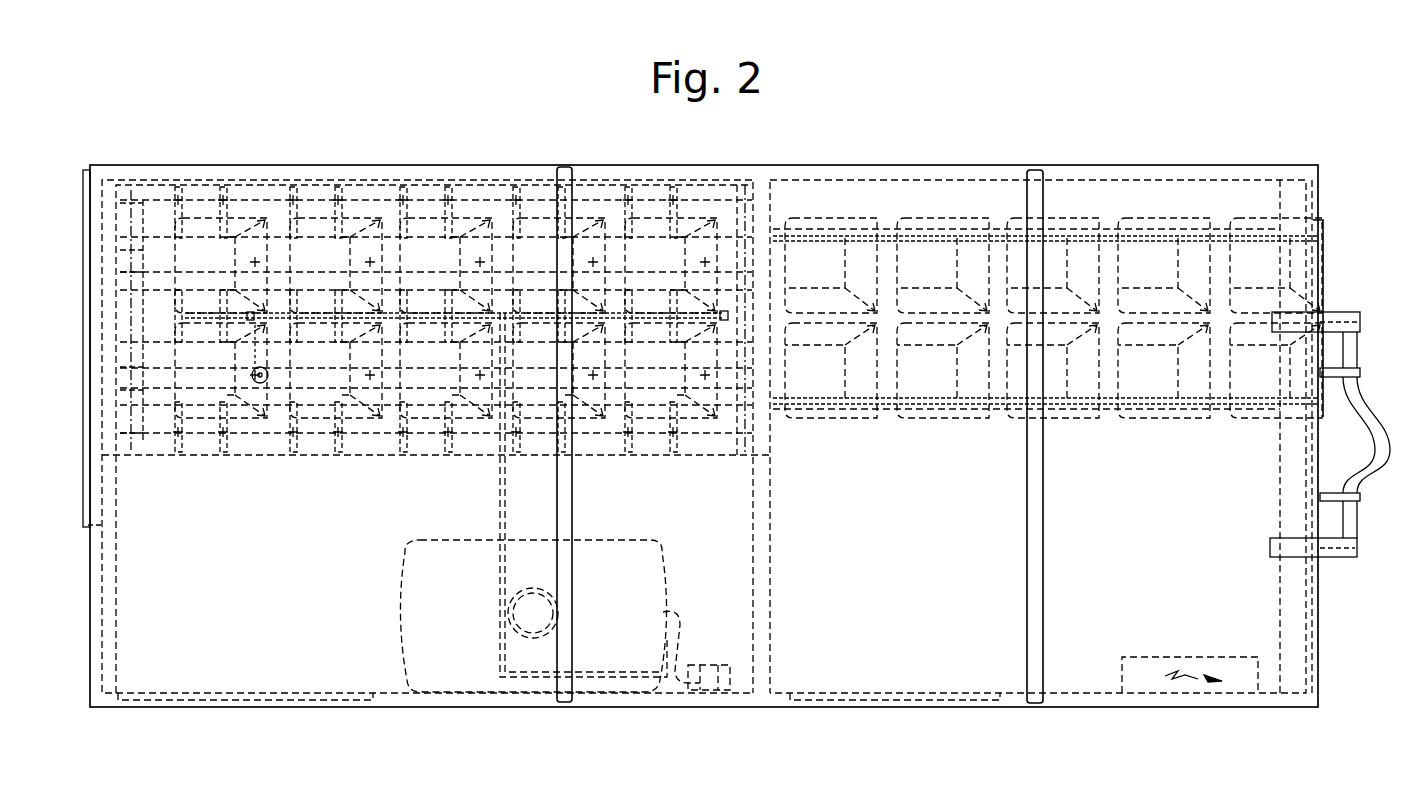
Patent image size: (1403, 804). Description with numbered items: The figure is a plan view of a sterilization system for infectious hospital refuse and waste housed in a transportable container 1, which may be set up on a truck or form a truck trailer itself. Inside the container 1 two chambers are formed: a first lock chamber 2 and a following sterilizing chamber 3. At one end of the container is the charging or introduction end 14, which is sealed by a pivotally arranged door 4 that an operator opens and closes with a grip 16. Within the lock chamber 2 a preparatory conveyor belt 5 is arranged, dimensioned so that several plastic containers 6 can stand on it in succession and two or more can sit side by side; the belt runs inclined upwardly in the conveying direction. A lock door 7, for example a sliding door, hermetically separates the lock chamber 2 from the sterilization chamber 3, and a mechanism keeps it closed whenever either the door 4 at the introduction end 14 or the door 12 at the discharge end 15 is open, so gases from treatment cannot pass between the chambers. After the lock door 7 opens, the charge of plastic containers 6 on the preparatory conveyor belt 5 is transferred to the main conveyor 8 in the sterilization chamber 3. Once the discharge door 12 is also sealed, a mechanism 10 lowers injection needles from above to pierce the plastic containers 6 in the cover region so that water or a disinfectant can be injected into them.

The container 1 is at (845, 712).
The lock chamber 2 is at (1090, 648).
The sterilizing chamber 3 is at (293, 648).
The door 4 is at (1320, 513).
The preparatory conveyor belt 5 is at (1115, 230).
The plastic containers 6 is at (512, 192).
The lock door 7 is at (763, 247).
The main conveyor 8 is at (613, 237).
The mechanism 10 is at (262, 198).
The discharge door 12 is at (97, 222).
The introduction end 14 is at (1322, 602).
The discharge end 15 is at (86, 556).
The grip 16 is at (1358, 472).